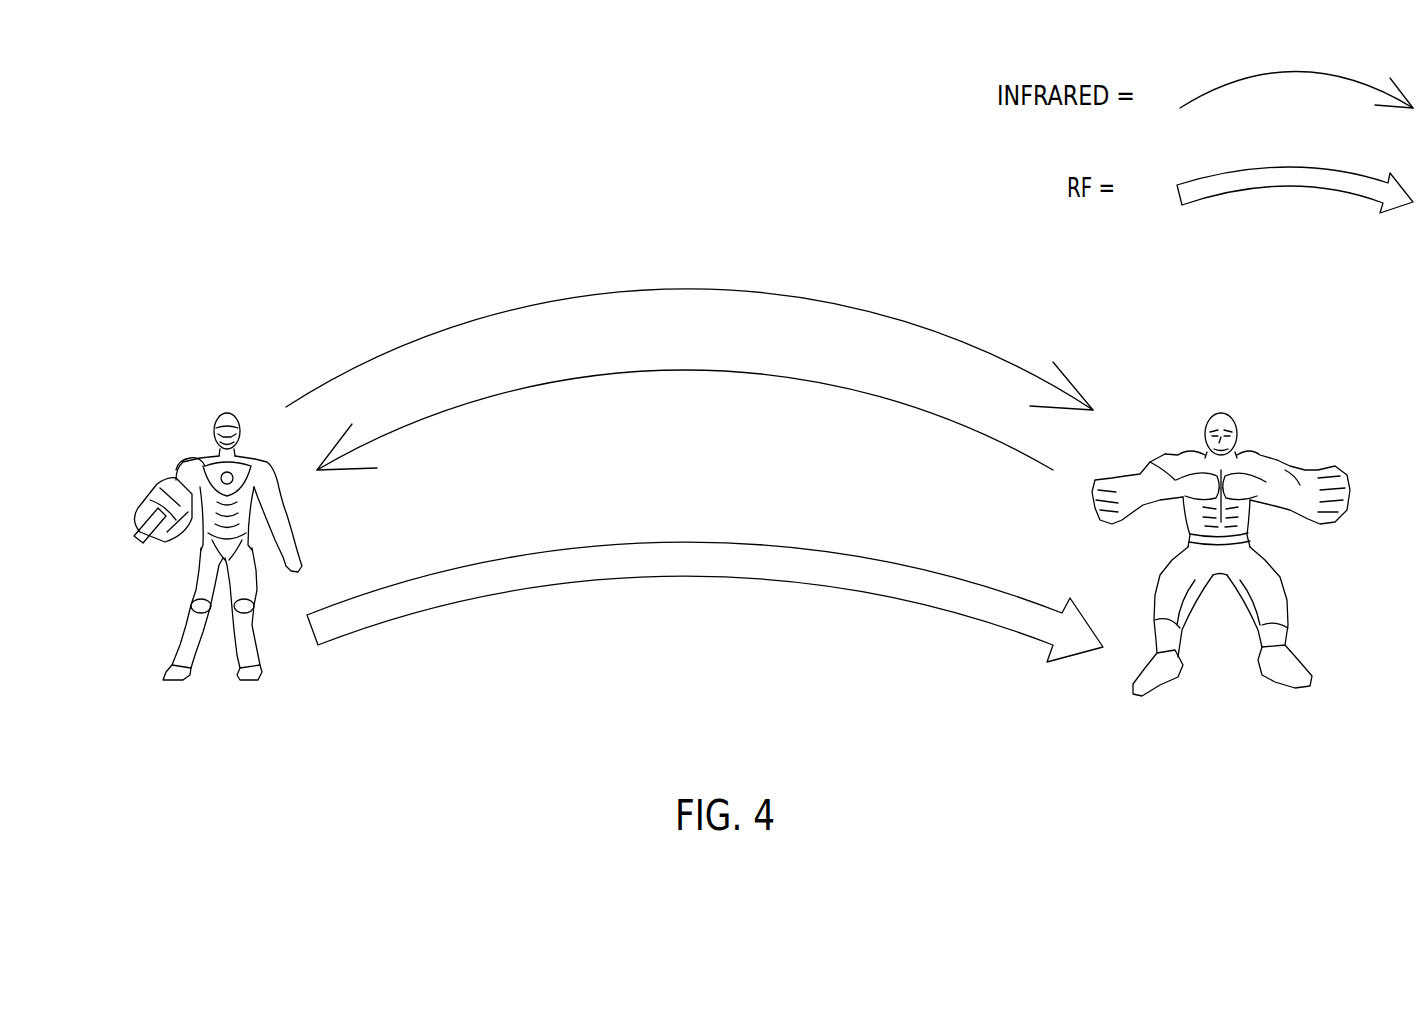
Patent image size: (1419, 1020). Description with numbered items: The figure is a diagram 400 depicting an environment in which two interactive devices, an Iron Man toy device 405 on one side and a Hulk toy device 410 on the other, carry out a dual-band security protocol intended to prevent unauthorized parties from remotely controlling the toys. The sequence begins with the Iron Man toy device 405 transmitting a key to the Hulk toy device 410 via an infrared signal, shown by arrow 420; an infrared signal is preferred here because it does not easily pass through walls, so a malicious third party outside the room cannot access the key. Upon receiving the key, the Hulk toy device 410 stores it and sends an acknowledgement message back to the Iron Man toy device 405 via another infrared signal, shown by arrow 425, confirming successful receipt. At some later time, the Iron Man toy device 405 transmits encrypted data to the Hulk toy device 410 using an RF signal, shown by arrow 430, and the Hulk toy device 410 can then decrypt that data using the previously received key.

The diagram 400 is at (330, 122).
The Iron Man toy device 405 is at (247, 678).
The Hulk toy device 410 is at (1168, 682).
The arrow 420 is at (689, 330).
The arrow 425 is at (685, 403).
The arrow 430 is at (705, 583).